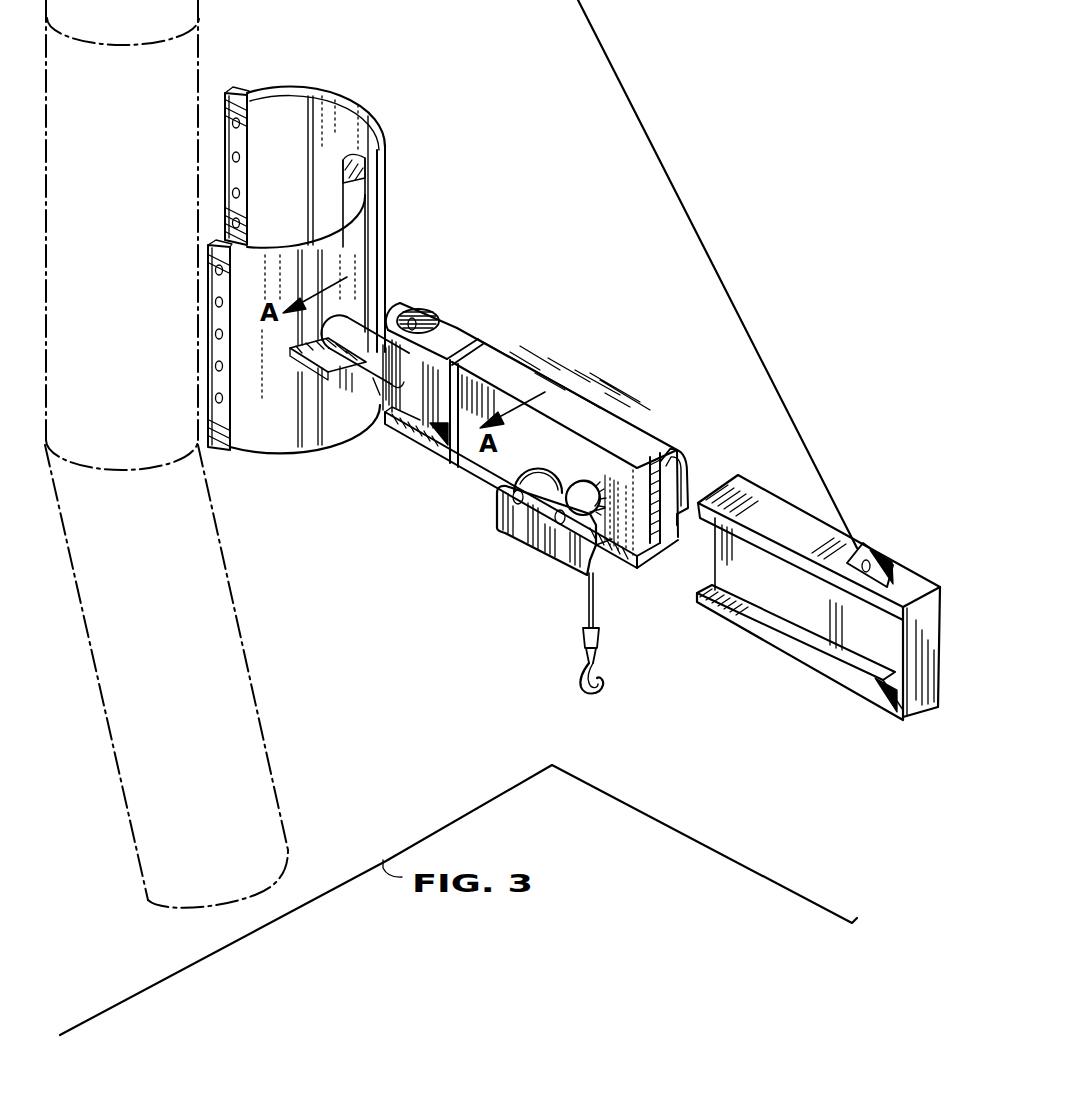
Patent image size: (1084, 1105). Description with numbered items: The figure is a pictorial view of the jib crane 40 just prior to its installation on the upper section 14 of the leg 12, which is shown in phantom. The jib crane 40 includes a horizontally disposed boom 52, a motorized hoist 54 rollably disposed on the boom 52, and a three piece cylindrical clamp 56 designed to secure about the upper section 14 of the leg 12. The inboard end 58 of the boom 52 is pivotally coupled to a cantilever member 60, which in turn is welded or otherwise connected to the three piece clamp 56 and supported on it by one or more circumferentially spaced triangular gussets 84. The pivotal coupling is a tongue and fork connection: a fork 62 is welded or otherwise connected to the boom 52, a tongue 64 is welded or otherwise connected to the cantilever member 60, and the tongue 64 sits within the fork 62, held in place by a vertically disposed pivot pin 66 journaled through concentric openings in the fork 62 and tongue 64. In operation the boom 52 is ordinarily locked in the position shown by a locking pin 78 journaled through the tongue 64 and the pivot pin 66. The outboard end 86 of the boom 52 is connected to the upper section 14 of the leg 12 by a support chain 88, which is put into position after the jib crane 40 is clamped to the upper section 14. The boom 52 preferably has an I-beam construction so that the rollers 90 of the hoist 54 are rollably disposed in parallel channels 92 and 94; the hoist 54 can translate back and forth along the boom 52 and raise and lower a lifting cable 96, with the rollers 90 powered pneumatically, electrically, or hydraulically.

The leg 12 is at (213, 719).
The upper section 14 is at (160, 62).
The jib crane 40 is at (560, 360).
The boom 52 is at (637, 433).
The motorized hoist 54 is at (530, 550).
The three piece cylindrical clamp 56 is at (385, 186).
The inboard end 58 is at (502, 350).
The cantilever member 60 is at (331, 316).
The fork 62 is at (392, 416).
The tongue 64 is at (457, 330).
The pivot pin 66 is at (418, 317).
The locking pin 78 is at (373, 378).
The triangular gussets 84 is at (318, 362).
The outboard end 86 is at (891, 556).
The support chain 88 is at (722, 286).
The rollers 90 is at (545, 462).
The channel 92 is at (632, 560).
The channel 94 is at (688, 476).
The lifting cable 96 is at (583, 618).